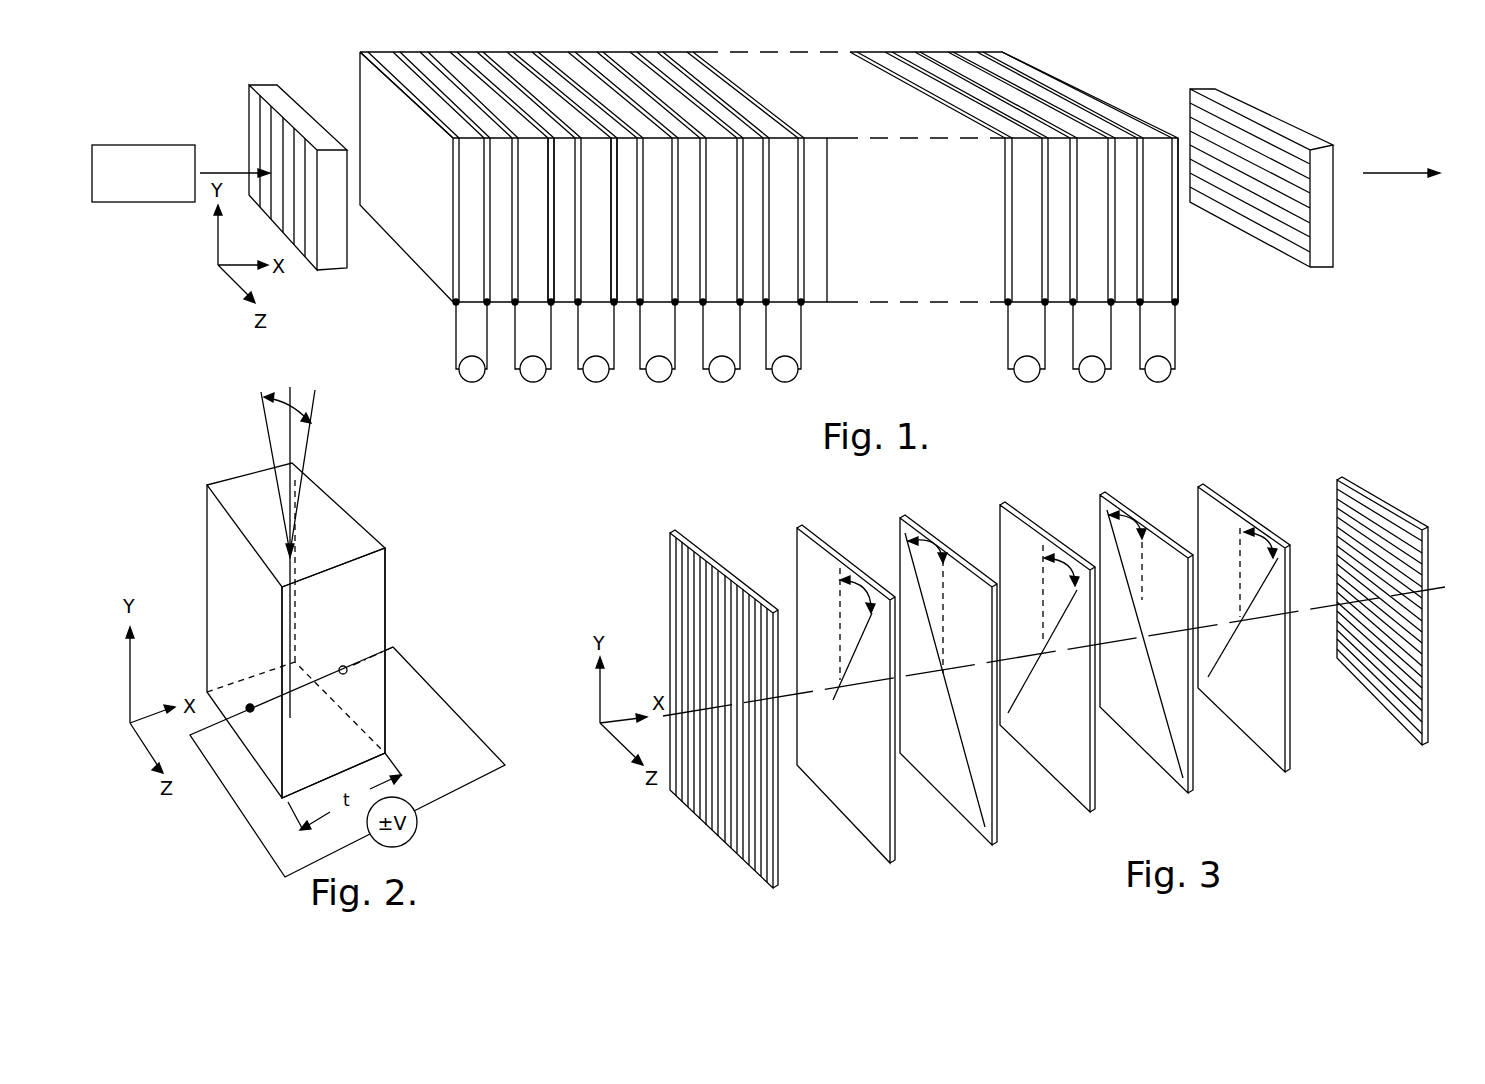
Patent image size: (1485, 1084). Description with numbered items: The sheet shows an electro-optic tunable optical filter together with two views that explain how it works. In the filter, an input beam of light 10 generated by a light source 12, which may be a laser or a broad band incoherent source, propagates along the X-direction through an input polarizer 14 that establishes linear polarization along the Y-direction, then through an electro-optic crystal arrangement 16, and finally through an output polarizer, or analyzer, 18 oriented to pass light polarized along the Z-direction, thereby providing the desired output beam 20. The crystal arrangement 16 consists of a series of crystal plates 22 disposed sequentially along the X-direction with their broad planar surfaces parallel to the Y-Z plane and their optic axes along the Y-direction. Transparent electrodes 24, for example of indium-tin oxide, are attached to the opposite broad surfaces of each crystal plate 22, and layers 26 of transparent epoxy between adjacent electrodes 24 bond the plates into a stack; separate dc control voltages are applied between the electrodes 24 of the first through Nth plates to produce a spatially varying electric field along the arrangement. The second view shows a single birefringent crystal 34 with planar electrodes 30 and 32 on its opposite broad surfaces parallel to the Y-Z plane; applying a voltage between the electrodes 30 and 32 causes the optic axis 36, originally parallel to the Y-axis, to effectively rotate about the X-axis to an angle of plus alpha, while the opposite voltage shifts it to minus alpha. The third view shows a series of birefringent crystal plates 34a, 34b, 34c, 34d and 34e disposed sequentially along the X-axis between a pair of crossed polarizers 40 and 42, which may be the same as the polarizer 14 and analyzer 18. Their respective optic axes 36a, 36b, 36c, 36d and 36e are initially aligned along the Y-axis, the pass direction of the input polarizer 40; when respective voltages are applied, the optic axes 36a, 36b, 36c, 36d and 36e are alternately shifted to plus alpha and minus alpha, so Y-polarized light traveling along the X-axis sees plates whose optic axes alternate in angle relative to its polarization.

In FIG. 1, the input beam of light 10 is at (228, 172).
In FIG. 1, the light source 12 is at (93, 145).
In FIG. 1, the input polarizer 14 is at (272, 85).
In FIG. 1, the electro-optic crystal arrangement 16 is at (769, 206).
In FIG. 1, the output polarizer (analyzer) 18 is at (1238, 105).
In FIG. 1, the output beam 20 is at (1395, 172).
In FIG. 1, the crystal plates 22 is at (432, 52).
In FIG. 1, the electrodes 24 is at (643, 50).
In FIG. 1, the layers of transparent epoxy 26 is at (527, 55).
In FIG. 2, the planar electrode 30 is at (298, 625).
In FIG. 2, the planar electrode 32 is at (387, 596).
In FIG. 2, the birefringent crystal 34 is at (238, 480).
In FIG. 2, the optic axis 36 is at (262, 417).
In FIG. 3, the birefringent crystal plate 34a is at (874, 707).
In FIG. 3, the birefringent crystal plate 34b is at (976, 683).
In FIG. 3, the birefringent crystal plate 34c is at (1076, 665).
In FIG. 3, the birefringent crystal plate 34d is at (1177, 651).
In FIG. 3, the birefringent crystal plate 34e is at (1276, 647).
In FIG. 3, the optic axis 36a is at (840, 588).
In FIG. 3, the optic axis 36b is at (943, 633).
In FIG. 3, the optic axis 36c is at (1043, 570).
In FIG. 3, the optic axis 36d is at (1142, 598).
In FIG. 3, the optic axis 36e is at (1240, 540).
In FIG. 3, the input polarizer 40 is at (683, 541).
In FIG. 3, the output polarizer 42 is at (1412, 522).